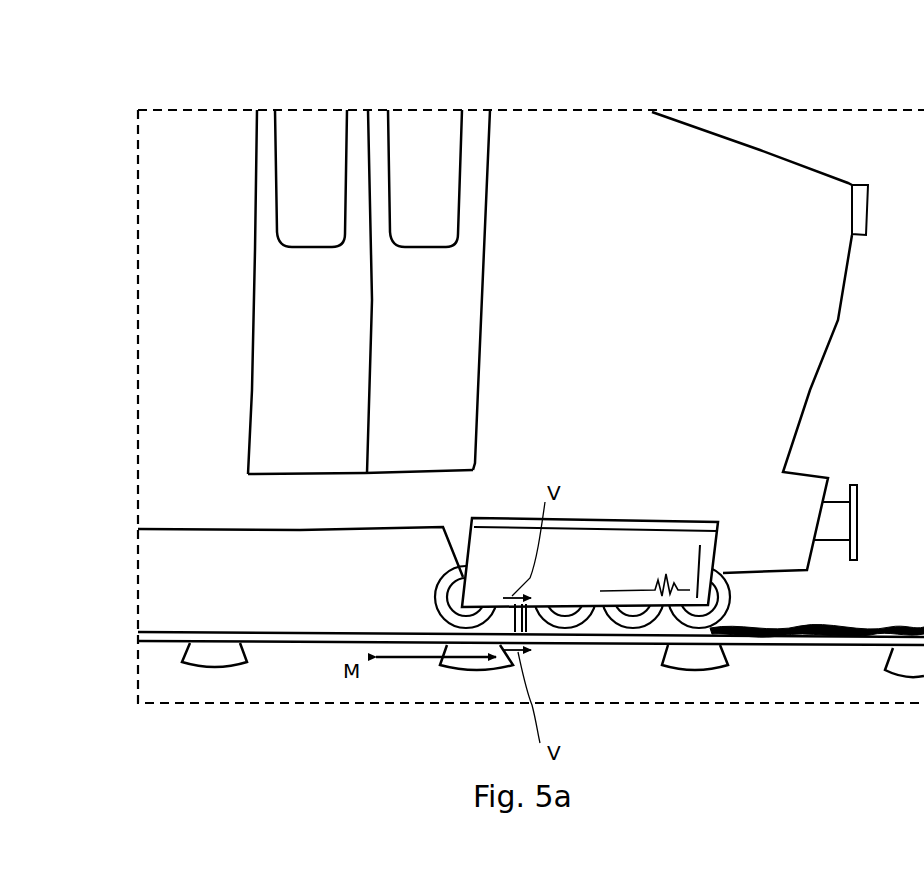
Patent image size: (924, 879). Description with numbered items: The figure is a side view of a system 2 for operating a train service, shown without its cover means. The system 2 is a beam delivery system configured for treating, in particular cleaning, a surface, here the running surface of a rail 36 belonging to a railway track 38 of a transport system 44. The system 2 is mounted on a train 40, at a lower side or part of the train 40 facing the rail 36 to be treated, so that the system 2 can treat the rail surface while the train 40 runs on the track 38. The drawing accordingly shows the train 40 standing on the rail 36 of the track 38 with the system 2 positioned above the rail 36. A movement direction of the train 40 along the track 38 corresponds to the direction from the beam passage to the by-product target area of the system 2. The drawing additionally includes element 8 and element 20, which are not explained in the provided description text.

The transport system 44 is at (226, 78).
The train 40 is at (666, 326).
The system 2 is at (599, 494).
The sensor 8 is at (528, 620).
The rail 36 is at (258, 636).
The railway track 38 is at (316, 600).
The contamination layer on rail 20 is at (860, 615).